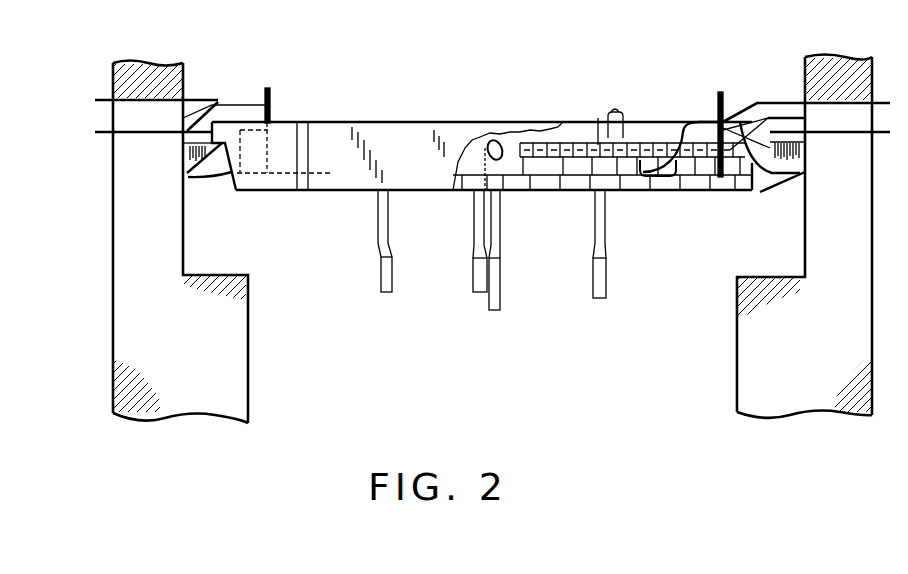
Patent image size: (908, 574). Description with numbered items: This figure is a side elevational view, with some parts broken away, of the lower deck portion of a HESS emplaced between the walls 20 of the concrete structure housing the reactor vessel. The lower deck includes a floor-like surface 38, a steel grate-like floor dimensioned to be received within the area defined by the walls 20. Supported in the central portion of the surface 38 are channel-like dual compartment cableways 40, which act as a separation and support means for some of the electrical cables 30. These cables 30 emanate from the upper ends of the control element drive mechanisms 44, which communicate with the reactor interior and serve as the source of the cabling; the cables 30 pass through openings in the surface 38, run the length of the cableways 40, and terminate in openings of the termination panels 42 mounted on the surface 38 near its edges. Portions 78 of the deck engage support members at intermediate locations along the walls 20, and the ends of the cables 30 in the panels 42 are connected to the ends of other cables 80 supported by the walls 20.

The walls 20 is at (248, 320).
The electrical cables 30 is at (389, 212).
The floor-like surface 38 is at (516, 181).
The cableways 40 is at (619, 165).
The termination panels 42 is at (270, 112).
The control element drive mechanisms 44 is at (381, 278).
The portions 78 is at (186, 180).
The cables 80 is at (222, 83).